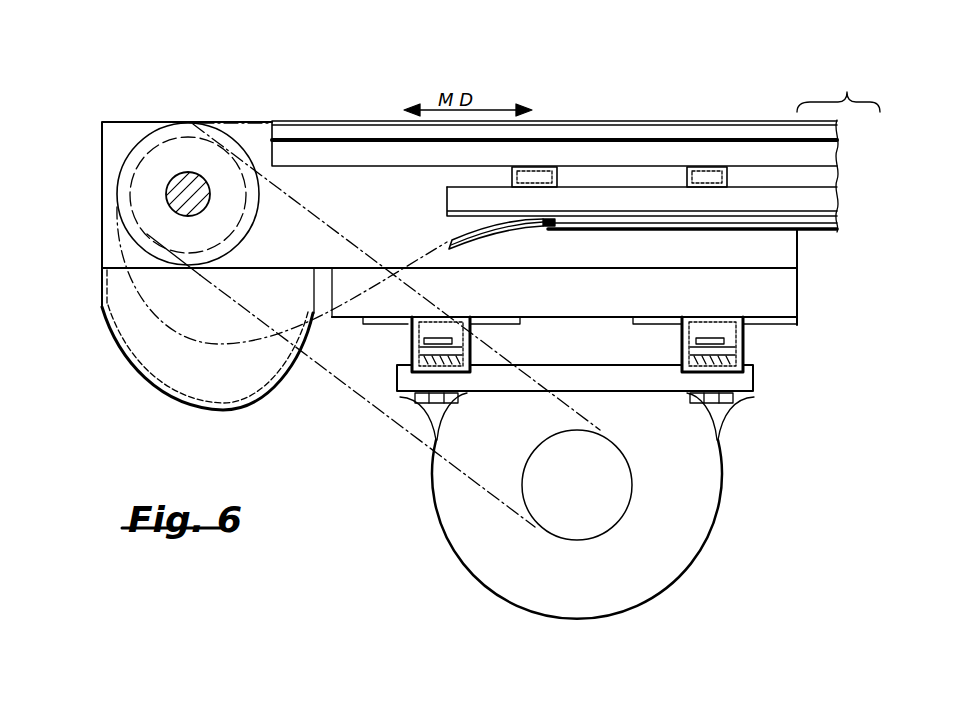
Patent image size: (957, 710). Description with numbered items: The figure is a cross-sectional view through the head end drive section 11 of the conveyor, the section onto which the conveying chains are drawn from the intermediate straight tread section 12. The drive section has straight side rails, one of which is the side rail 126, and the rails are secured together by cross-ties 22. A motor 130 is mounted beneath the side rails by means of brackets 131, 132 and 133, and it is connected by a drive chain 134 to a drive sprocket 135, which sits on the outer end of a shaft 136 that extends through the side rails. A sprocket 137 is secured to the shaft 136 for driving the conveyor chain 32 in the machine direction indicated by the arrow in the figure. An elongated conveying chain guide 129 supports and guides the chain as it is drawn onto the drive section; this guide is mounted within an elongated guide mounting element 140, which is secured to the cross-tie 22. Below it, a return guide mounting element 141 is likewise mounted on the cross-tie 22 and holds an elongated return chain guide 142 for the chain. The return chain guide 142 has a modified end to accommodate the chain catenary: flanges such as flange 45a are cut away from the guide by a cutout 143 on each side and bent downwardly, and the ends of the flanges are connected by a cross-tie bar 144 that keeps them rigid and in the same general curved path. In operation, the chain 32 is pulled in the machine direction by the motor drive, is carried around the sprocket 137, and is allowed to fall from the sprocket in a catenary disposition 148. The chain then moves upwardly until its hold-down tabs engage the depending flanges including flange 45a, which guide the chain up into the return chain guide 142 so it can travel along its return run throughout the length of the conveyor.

The head end drive section 11 is at (268, 438).
The intermediate straight tread section 12 is at (848, 90).
The cross-tie 22 is at (678, 178).
The conveyor chain 32 is at (246, 121).
The flange 45a is at (528, 228).
The side rail 126 is at (766, 251).
The conveying chain guide 129 is at (364, 128).
The motor 130 is at (584, 600).
The bracket 131 is at (778, 297).
The bracket 132 is at (486, 340).
The bracket 133 is at (666, 340).
The drive chain 134 is at (352, 396).
The drive sprocket 135 is at (128, 172).
The shaft 136 is at (198, 184).
The sprocket 137 is at (135, 158).
The guide mounting element 140 is at (402, 152).
The return guide mounting element 141 is at (447, 197).
The return chain guide 142 is at (652, 224).
The cutout 143 is at (563, 223).
The cross-tie bar 144 is at (458, 247).
The catenary disposition 148 is at (200, 345).